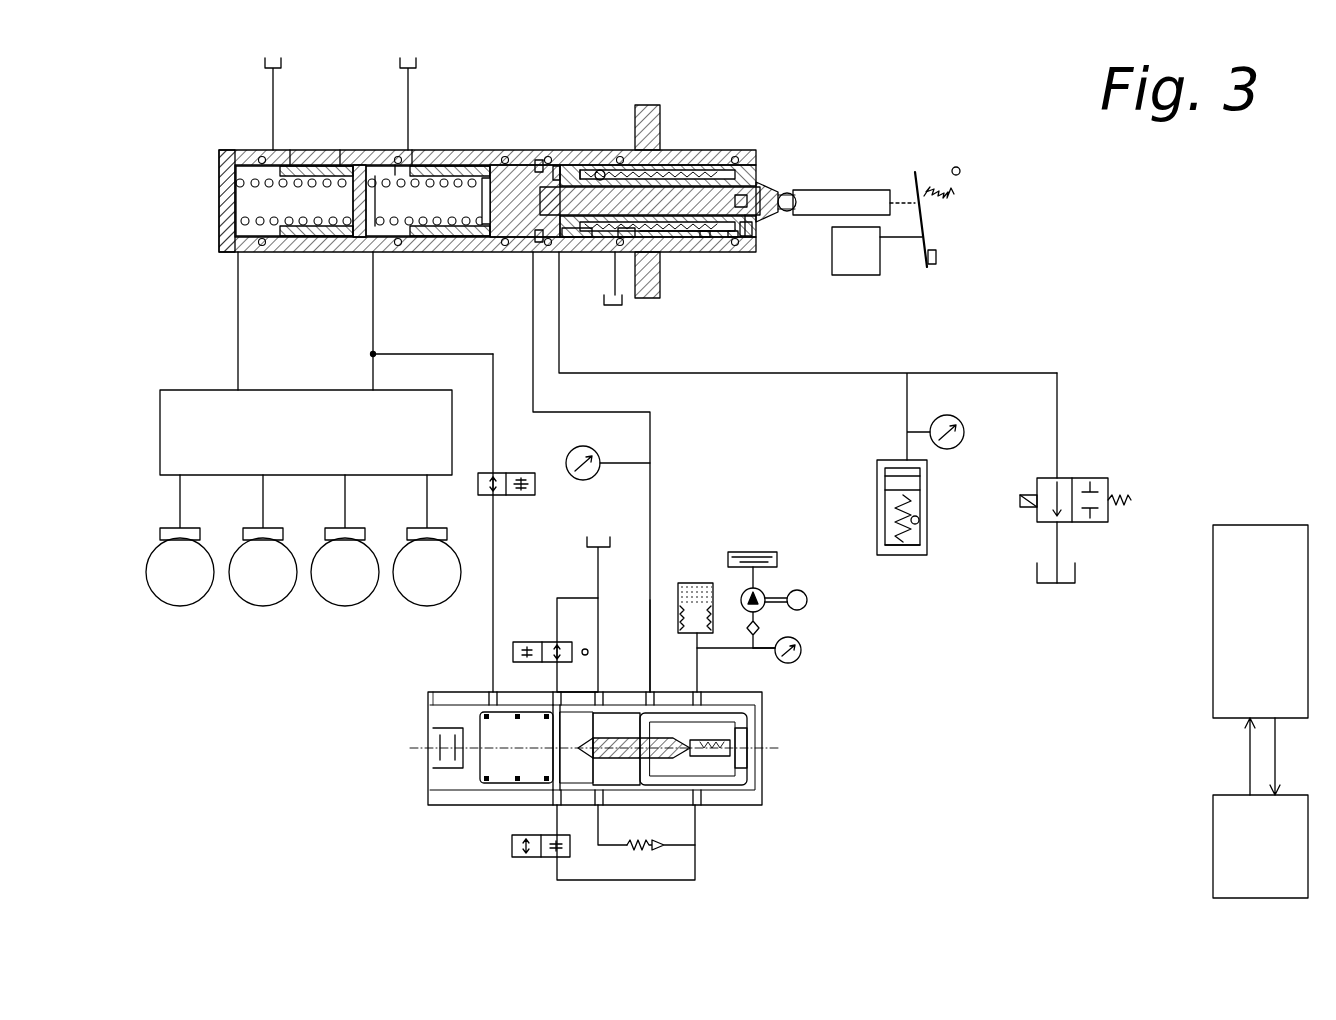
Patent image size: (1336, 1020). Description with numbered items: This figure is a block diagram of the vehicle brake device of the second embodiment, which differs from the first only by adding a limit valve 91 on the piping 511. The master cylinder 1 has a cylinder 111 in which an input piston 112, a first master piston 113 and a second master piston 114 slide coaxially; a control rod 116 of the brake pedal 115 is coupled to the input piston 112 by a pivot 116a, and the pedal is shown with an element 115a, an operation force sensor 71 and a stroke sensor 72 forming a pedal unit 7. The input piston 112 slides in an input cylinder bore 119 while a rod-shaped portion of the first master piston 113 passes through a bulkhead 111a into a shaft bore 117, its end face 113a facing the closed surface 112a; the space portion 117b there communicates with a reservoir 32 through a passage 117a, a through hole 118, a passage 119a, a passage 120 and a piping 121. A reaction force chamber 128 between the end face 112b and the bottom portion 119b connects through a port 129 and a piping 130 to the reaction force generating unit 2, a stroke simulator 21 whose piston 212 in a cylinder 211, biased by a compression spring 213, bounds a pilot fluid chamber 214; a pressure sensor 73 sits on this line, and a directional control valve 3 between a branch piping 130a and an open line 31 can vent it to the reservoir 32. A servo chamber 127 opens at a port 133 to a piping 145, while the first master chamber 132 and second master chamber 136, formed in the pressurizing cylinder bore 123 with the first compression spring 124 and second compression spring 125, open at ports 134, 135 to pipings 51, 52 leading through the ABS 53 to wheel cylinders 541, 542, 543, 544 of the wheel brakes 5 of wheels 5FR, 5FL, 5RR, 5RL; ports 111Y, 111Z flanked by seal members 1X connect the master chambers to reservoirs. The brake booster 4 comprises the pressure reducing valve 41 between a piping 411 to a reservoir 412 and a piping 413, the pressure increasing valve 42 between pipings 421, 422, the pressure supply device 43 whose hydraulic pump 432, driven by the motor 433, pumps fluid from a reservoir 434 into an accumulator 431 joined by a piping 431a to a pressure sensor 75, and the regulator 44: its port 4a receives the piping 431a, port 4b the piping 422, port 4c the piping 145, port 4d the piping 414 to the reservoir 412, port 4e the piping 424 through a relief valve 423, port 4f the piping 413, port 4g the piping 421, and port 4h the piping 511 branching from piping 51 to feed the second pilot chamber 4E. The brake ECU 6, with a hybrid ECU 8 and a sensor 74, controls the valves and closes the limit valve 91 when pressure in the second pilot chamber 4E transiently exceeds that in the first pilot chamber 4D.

The master cylinder 1 is at (641, 309).
The seal members 1X is at (262, 156).
The cylinder 111 is at (438, 150).
The port 111Y is at (414, 152).
The port 111Z is at (288, 158).
The bulkhead 111a is at (556, 166).
The input piston 112 is at (772, 190).
The closed surface 112a is at (748, 238).
The distal end portion side end face 112b is at (656, 108).
The first master piston 113 is at (500, 182).
The end face 113a is at (740, 240).
The second master piston 114 is at (340, 152).
The brake pedal 115 is at (918, 172).
The pedal spring 115a is at (960, 190).
The control rod 116 is at (856, 190).
The pivot 116a is at (793, 194).
The shaft bore 117 is at (672, 165).
The passage 117a is at (706, 240).
The space portion 117b is at (735, 240).
The through hole 118 is at (742, 240).
The input cylinder bore 119 is at (616, 172).
The passage 119a is at (670, 255).
The bottom portion 119b is at (580, 172).
The passage 120 is at (628, 255).
The piping 121 is at (612, 280).
The pressurizing cylinder bore 123 is at (395, 165).
The first compression spring 124 is at (430, 252).
The second compression spring 125 is at (238, 222).
The servo chamber 127 is at (539, 160).
The reaction force chamber 128 is at (600, 170).
The port 129 is at (568, 252).
The piping 130 is at (561, 340).
The branch piping 130a is at (1057, 397).
The first master chamber 132 is at (376, 180).
The port 133 is at (502, 252).
The port 134 is at (380, 252).
The port 135 is at (252, 252).
The second master chamber 136 is at (232, 158).
The piping 145 is at (533, 300).
The reaction force generating unit 2 is at (889, 535).
The stroke simulator 21 is at (905, 556).
The cylinder 211 is at (918, 520).
The piston 212 is at (912, 488).
The compression spring 213 is at (905, 545).
The pilot fluid chamber 214 is at (885, 478).
The directional control valve 3 is at (1086, 530).
The open line 31 is at (1060, 548).
The reservoir 32 is at (604, 304).
The brake booster 4 is at (634, 748).
The port 4a is at (698, 698).
The port 4b is at (698, 806).
The port 4c is at (651, 698).
The port 4d is at (601, 698).
The port 4e is at (602, 806).
The port 4f is at (560, 698).
The port 4g is at (560, 806).
The port 4h is at (485, 698).
The first pilot chamber 4D is at (550, 730).
The second pilot chamber 4E is at (478, 722).
The pressure reducing valve 41 is at (531, 632).
The piping 411 is at (560, 612).
The reservoir 412 is at (592, 536).
The piping 413 is at (555, 688).
The piping 414 is at (598, 632).
The pressure increasing valve 42 is at (537, 870).
The piping 421 is at (550, 828).
The piping 422 is at (610, 880).
The relief valve 423 is at (648, 850).
The piping 424 is at (598, 846).
The pressure supply device 43 is at (749, 606).
The accumulator 431 is at (682, 620).
The piping 431a is at (720, 658).
The hydraulic pump 432 is at (742, 600).
The motor 433 is at (805, 604).
The reservoir 434 is at (777, 558).
The regulator 44 is at (772, 780).
The wheel brakes 5 is at (280, 494).
The piping 51 is at (375, 326).
The piping 511 is at (495, 400).
The piping 52 is at (240, 326).
The ABS 53 is at (170, 390).
The wheel cylinder 541 is at (188, 530).
The wheel cylinder 542 is at (270, 530).
The wheel cylinder 543 is at (353, 530).
The wheel cylinder 544 is at (440, 530).
The wheel 5FR is at (165, 602).
The wheel 5FL is at (247, 602).
The wheel 5RR is at (325, 602).
The wheel 5RL is at (405, 602).
The brake ECU 6 is at (1308, 562).
The pedal unit 7 is at (900, 213).
The operation force sensor 71 is at (937, 255).
The stroke sensor 72 is at (853, 275).
The pressure sensor 73 is at (955, 422).
The sensor 74 is at (565, 462).
The pressure sensor 75 is at (792, 663).
The hybrid ECU 8 is at (1308, 832).
The limit valve 91 is at (488, 472).